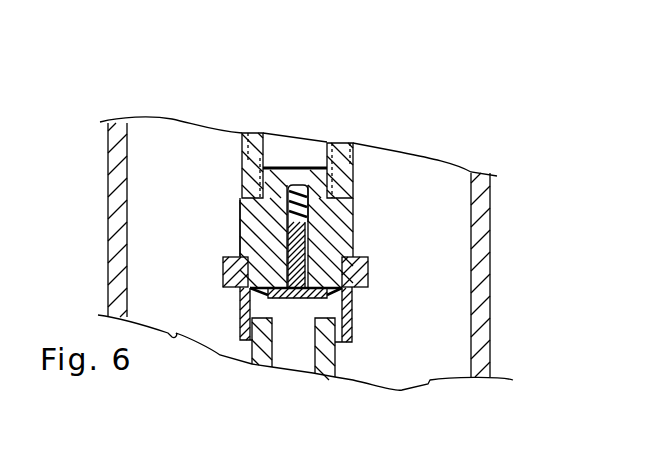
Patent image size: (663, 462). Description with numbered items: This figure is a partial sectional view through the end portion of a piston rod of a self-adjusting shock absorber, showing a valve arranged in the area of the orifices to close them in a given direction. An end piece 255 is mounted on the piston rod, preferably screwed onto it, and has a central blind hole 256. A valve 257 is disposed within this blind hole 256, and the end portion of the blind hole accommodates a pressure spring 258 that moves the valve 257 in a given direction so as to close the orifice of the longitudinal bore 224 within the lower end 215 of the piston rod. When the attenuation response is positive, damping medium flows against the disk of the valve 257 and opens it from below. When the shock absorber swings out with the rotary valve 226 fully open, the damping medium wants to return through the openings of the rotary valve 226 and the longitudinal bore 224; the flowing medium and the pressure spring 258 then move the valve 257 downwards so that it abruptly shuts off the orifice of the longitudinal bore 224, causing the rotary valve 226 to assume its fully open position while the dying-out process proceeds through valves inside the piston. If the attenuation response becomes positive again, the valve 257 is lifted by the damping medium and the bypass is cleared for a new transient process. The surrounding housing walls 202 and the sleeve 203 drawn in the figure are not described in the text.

The housing wall 202 is at (484, 250).
The guide sleeve 203 is at (340, 143).
The end piece 255 is at (340, 233).
The central blind hole 256 is at (263, 221).
The valve 257 is at (296, 302).
The pressure spring 258 is at (297, 186).
The rotary valve 226 is at (348, 310).
The longitudinal bore 224 is at (274, 349).
The lower end of the piston rod 215 is at (330, 370).